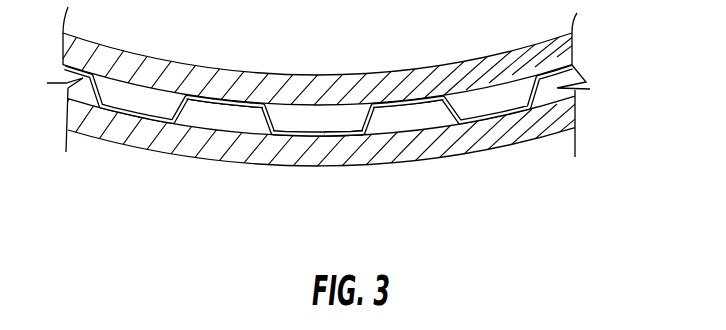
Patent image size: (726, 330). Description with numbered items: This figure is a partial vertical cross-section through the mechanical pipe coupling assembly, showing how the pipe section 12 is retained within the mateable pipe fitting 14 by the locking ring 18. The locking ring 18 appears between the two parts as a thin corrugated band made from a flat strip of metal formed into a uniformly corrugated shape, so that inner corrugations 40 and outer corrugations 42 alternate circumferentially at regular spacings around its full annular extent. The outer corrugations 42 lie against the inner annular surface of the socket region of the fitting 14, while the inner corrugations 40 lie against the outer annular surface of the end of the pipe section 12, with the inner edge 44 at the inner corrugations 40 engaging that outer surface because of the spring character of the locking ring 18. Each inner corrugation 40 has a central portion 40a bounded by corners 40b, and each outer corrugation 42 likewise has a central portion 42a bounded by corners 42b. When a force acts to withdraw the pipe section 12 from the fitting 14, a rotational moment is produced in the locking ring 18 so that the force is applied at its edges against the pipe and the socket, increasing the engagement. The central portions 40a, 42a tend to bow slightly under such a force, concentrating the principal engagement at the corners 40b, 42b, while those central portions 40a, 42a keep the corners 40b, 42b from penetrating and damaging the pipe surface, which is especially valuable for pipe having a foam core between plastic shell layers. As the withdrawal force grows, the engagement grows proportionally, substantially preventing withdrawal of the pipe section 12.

The pipe section 12 is at (538, 43).
The pipe fitting 14 is at (500, 148).
The locking ring 18 is at (575, 63).
The inner corrugations 40 is at (231, 100).
The central portions of the inner corrugations 40a is at (240, 107).
The corners of the inner corrugations 40b is at (188, 100).
The outer corrugations 42 is at (304, 137).
The central portions of the outer corrugations 42a is at (363, 132).
The corners of the outer corrugations 42b is at (366, 136).
The inner edge 44 is at (403, 98).